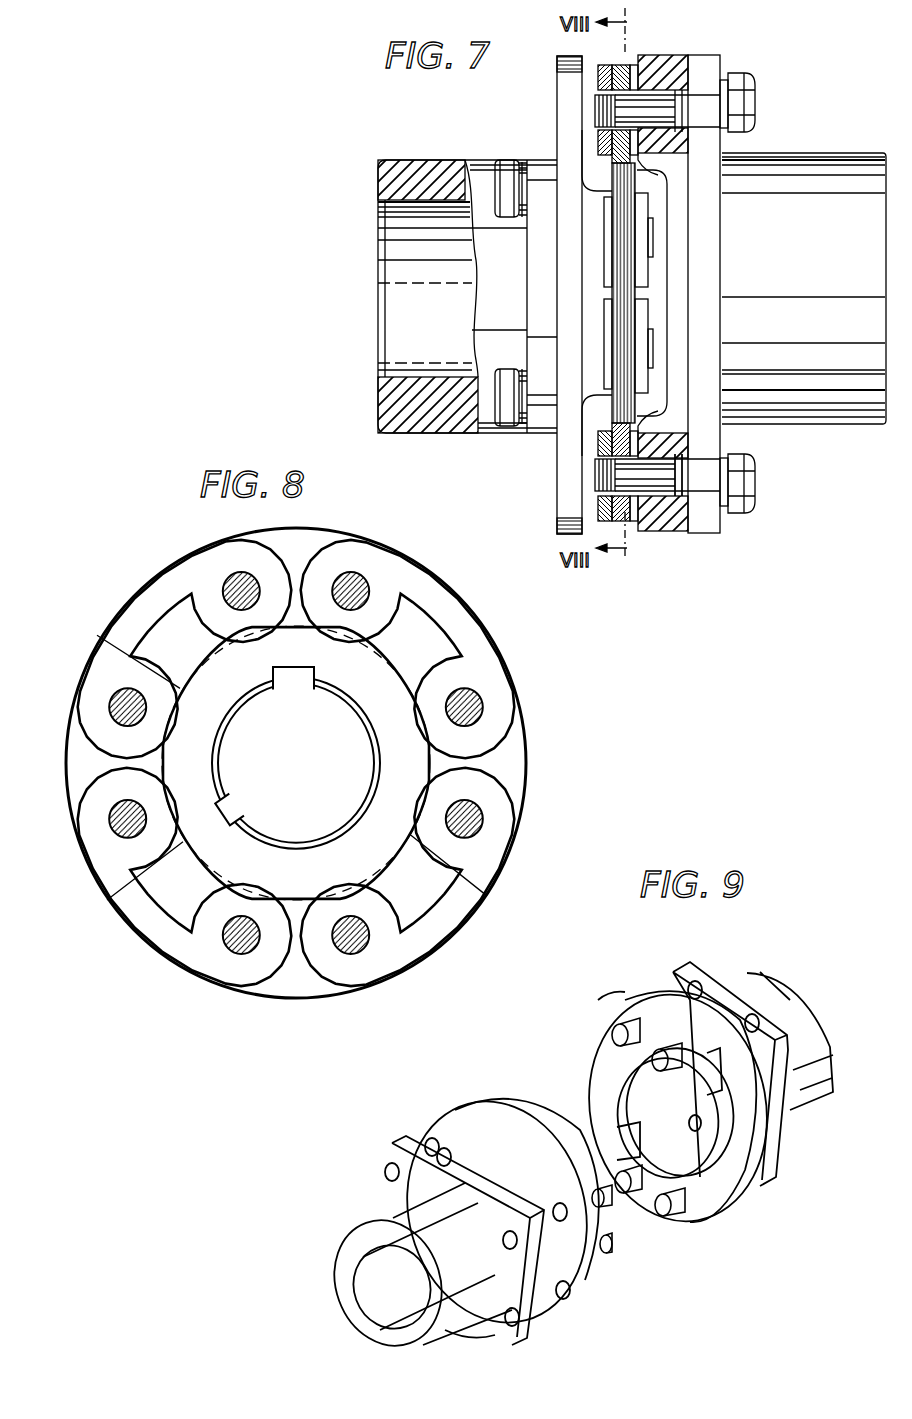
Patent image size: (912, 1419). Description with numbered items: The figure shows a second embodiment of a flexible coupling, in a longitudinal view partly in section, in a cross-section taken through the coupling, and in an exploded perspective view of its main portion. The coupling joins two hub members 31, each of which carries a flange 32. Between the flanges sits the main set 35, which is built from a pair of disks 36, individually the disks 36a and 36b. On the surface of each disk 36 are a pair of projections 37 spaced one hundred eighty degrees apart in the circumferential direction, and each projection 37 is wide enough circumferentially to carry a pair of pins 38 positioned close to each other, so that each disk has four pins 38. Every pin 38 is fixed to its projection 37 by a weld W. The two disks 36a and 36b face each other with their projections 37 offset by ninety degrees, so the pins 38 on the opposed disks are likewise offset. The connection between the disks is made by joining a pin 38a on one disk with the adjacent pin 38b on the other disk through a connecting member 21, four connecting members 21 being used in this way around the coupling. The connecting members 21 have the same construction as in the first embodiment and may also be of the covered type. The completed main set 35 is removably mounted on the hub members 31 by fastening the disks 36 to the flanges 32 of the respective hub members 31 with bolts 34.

In FIG. 7, the connecting member 21 is at (622, 328).
In FIG. 8, the connecting member 21 is at (407, 687).
In FIG. 7, the hub member 31 is at (426, 159).
In FIG. 8, the hub member 31 is at (380, 744).
In FIG. 9, the hub member 31 is at (467, 1318).
In FIG. 7, the flange 32 is at (547, 158).
In FIG. 9, the flange 32 is at (533, 1322).
In FIG. 7, the bolt 34 is at (508, 178).
In FIG. 7, the main set 35 is at (668, 56).
In FIG. 8, the main set 35 is at (182, 577).
In FIG. 7, the disk 36 is at (572, 505).
In FIG. 8, the disk 36 is at (480, 647).
In FIG. 9, the disk 36a is at (473, 1103).
In FIG. 9, the disk 36b is at (598, 1058).
In FIG. 7, the projection 37 is at (582, 262).
In FIG. 9, the projection 37 is at (610, 1030).
In FIG. 7, the pin 38 is at (680, 463).
In FIG. 8, the pin 38a is at (241, 582).
In FIG. 9, the pin 38a is at (608, 1250).
In FIG. 8, the pin 38b is at (477, 710).
In FIG. 9, the pin 38b is at (622, 1020).
In FIG. 7, the weld W is at (690, 495).